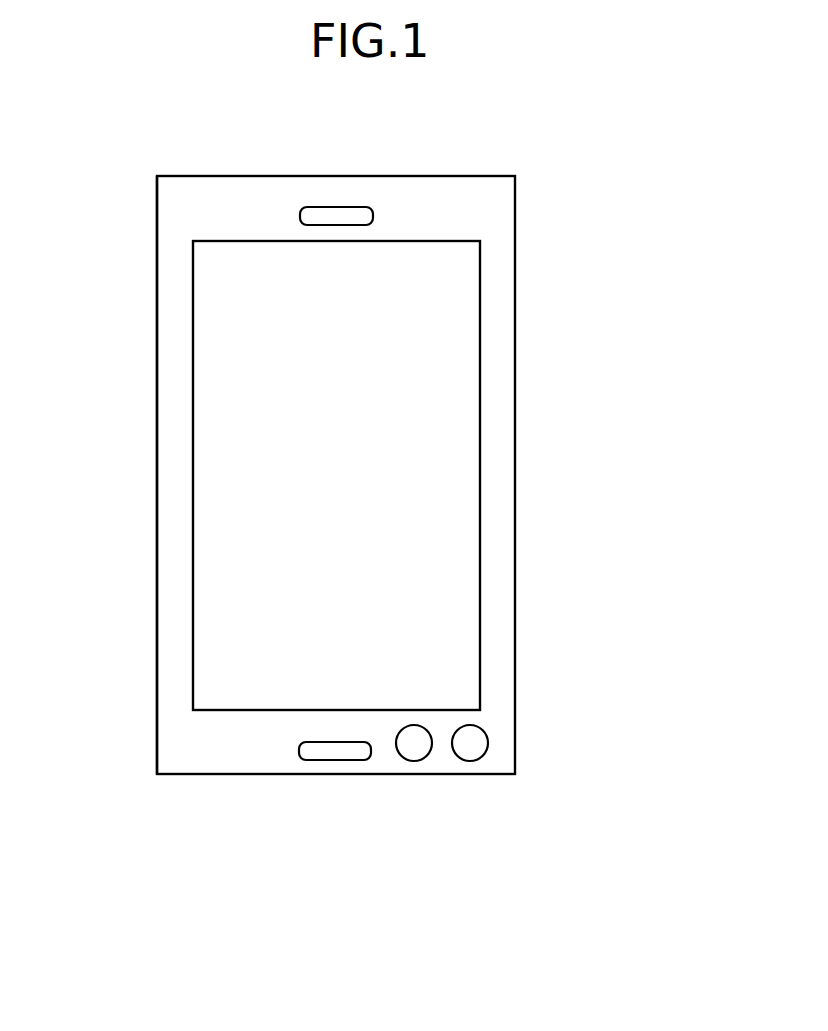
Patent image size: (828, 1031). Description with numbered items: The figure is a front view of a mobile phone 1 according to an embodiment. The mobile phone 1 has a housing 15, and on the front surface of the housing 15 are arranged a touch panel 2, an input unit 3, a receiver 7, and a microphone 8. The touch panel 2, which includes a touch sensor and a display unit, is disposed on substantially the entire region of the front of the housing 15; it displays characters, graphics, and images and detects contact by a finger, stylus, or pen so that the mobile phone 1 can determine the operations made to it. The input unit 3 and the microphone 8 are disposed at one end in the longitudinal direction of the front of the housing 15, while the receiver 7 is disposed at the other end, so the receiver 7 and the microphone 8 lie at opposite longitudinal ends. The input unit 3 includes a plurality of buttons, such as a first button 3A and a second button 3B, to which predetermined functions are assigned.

The mobile phone 1 is at (548, 163).
The touch panel 2 is at (432, 492).
The housing 15 is at (173, 492).
The receiver 7 is at (333, 207).
The microphone 8 is at (337, 760).
The first button 3A is at (416, 761).
The second button 3B is at (471, 761).
The input unit 3 is at (493, 833).